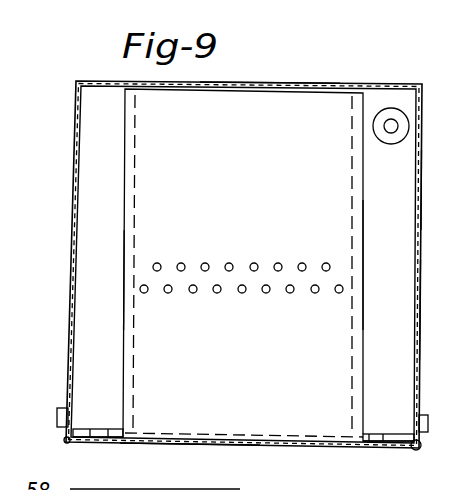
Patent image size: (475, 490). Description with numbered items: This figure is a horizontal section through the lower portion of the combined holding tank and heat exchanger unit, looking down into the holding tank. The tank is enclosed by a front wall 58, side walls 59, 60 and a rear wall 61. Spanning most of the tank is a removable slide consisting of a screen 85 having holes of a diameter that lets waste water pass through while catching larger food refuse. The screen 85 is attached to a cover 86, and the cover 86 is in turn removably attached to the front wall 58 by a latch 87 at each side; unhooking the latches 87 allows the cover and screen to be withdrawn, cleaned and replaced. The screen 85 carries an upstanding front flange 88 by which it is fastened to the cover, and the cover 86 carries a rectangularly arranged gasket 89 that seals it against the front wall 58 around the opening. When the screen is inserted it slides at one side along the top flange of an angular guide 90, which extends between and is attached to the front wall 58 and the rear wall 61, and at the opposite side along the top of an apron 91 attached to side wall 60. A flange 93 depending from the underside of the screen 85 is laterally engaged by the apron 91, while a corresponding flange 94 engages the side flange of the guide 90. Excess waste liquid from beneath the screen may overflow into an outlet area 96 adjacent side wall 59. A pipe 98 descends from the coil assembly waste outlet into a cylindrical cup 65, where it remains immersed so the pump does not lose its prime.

The front wall 58 is at (86, 428).
The side wall 59 is at (420, 206).
The side wall 60 is at (73, 228).
The rear wall 61 is at (272, 84).
The cylindrical cup 65 is at (397, 142).
The screen 85 is at (258, 151).
The cover 86 is at (153, 442).
The latch 87 is at (67, 400).
The upstanding front flange 88 is at (296, 437).
The gasket 89 is at (103, 441).
The angular guide 90 is at (360, 258).
The apron 91 is at (106, 282).
The flange 93 is at (138, 226).
The flange 94 is at (352, 216).
The outlet area 96 is at (403, 313).
The pipe 98 is at (398, 126).